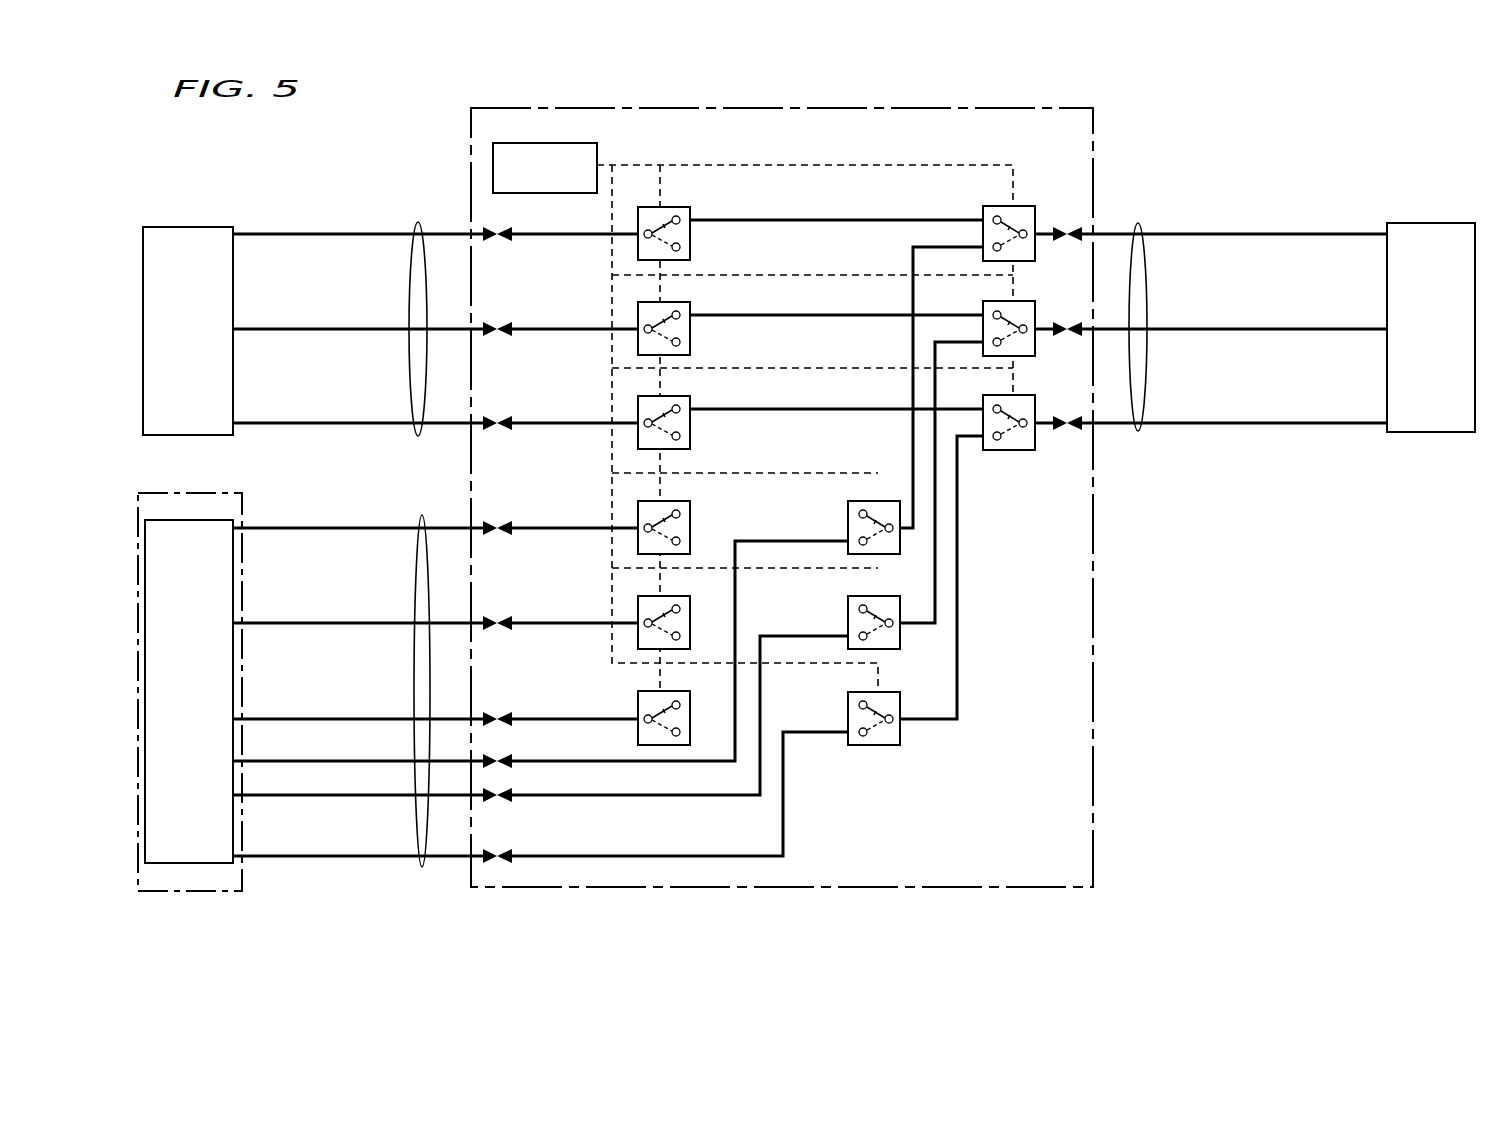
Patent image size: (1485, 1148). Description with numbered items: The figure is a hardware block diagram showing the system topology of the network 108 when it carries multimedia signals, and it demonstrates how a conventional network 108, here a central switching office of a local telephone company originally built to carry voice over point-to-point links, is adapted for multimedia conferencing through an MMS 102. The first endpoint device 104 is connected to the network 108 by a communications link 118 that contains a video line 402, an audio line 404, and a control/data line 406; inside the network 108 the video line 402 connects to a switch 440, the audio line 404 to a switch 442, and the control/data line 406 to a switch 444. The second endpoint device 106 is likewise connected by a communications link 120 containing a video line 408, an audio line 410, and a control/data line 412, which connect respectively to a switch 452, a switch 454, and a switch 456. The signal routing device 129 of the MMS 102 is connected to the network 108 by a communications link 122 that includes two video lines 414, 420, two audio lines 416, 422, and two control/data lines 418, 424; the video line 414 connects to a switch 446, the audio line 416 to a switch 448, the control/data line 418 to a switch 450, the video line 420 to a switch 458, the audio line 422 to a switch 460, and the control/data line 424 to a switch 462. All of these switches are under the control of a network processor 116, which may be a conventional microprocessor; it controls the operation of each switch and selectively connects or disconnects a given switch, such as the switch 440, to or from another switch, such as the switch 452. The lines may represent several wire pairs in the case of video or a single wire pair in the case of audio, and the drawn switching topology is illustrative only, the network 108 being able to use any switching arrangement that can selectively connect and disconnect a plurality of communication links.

The MMS 102 is at (143, 493).
The first endpoint device 104 is at (159, 227).
The second endpoint device 106 is at (1415, 223).
The network 108 is at (470, 122).
The network processor 116 is at (527, 193).
The communications link 118 is at (418, 222).
The communications link 120 is at (1138, 222).
The communications link 122 is at (422, 867).
The signal routing device 129 is at (194, 864).
The video line 402 is at (394, 234).
The audio line 404 is at (394, 329).
The control/data line 406 is at (369, 423).
The video line 408 is at (1375, 233).
The audio line 410 is at (1376, 328).
The control/data line 412 is at (1351, 420).
The video line 414 is at (407, 528).
The audio line 416 is at (407, 623).
The control/data line 418 is at (385, 718).
The video line 420 is at (407, 761).
The audio line 422 is at (407, 795).
The control/data line 424 is at (385, 855).
The switch 440 is at (672, 207).
The switch 442 is at (672, 308).
The switch 444 is at (672, 403).
The switch 446 is at (672, 508).
The switch 448 is at (672, 603).
The switch 450 is at (672, 698).
The switch 452 is at (1002, 206).
The switch 454 is at (1002, 306).
The switch 456 is at (1002, 401).
The switch 458 is at (848, 512).
The switch 460 is at (848, 602).
The switch 462 is at (848, 704).